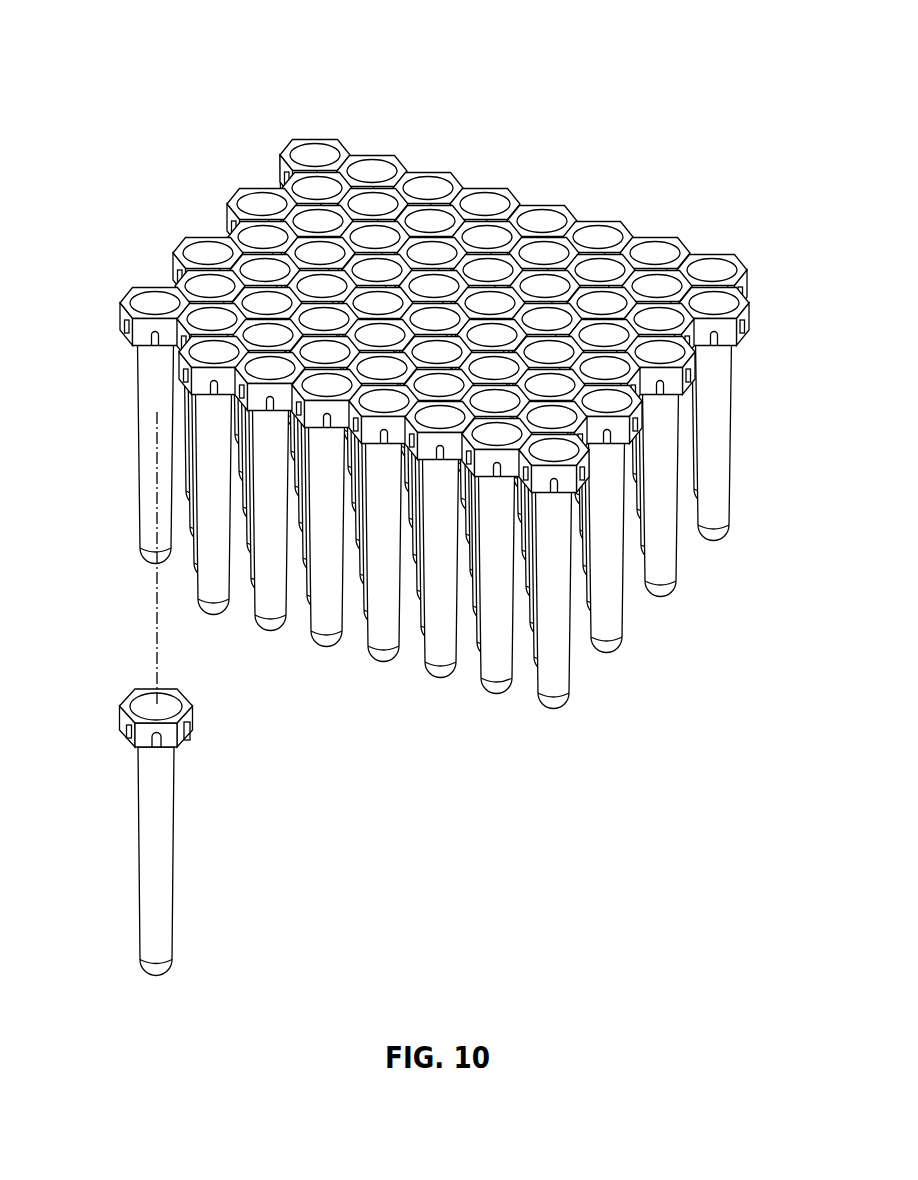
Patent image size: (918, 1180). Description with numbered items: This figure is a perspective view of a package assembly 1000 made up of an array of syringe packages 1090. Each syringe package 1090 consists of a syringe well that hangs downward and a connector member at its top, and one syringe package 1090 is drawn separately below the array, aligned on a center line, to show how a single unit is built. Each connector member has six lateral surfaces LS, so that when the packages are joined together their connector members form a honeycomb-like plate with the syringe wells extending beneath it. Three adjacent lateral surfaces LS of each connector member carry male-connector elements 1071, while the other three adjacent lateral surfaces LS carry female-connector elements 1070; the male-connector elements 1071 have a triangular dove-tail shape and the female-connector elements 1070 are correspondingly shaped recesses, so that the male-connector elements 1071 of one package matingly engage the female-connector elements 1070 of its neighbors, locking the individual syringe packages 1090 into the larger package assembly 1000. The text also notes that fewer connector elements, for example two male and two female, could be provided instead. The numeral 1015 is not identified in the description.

The package assembly 1000 is at (482, 373).
The hexagonal cell opening 1015 is at (372, 170).
The syringe package 1090 is at (145, 810).
The male-connector element 1071 is at (192, 734).
The female-connector element 1070 is at (130, 737).
The lateral surface LS is at (150, 280).